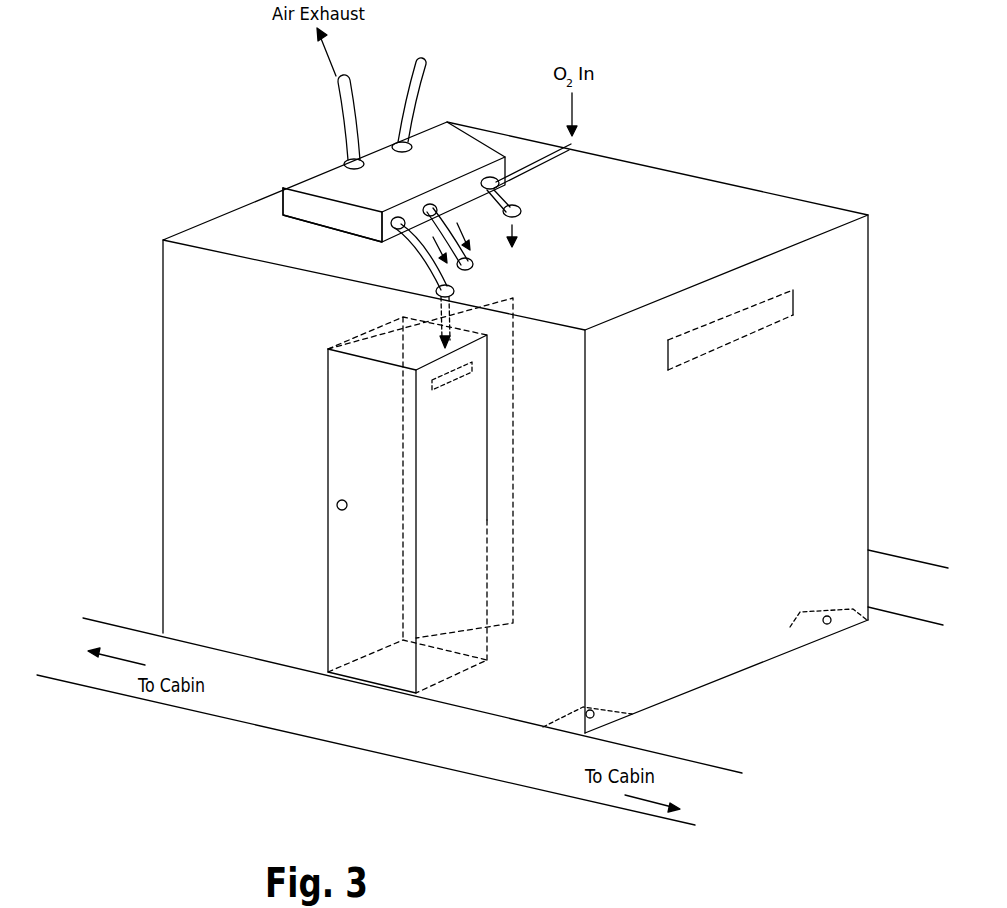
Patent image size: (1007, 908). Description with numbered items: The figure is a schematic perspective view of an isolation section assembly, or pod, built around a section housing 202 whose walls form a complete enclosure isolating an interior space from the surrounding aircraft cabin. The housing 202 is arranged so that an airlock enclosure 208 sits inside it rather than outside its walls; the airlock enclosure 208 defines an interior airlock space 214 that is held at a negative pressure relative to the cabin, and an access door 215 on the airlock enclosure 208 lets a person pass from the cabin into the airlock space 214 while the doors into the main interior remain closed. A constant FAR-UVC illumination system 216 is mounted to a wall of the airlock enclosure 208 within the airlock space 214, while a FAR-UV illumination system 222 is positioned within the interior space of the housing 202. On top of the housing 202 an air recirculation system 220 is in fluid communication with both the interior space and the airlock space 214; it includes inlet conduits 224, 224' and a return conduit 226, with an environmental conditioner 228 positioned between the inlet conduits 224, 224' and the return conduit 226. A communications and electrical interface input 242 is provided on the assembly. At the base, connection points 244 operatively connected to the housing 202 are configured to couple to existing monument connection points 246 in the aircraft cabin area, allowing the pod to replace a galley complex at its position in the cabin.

The section housing 202 is at (515, 427).
The airlock enclosure 208 is at (487, 603).
The interior airlock space 214 is at (433, 668).
The access door 215 is at (512, 432).
The constant FAR-UVC illumination system 216 is at (447, 390).
The air recirculation system 220 is at (320, 158).
The FAR-UV illumination system 222 is at (800, 293).
The inlet conduit 224 is at (407, 282).
The inlet conduit 224' is at (471, 237).
The return conduit 226 is at (517, 193).
The environmental conditioner 228 is at (282, 200).
The communications and electrical interface input 242 is at (417, 98).
The connection point 244 is at (615, 727).
The monument connection point 246 is at (593, 707).